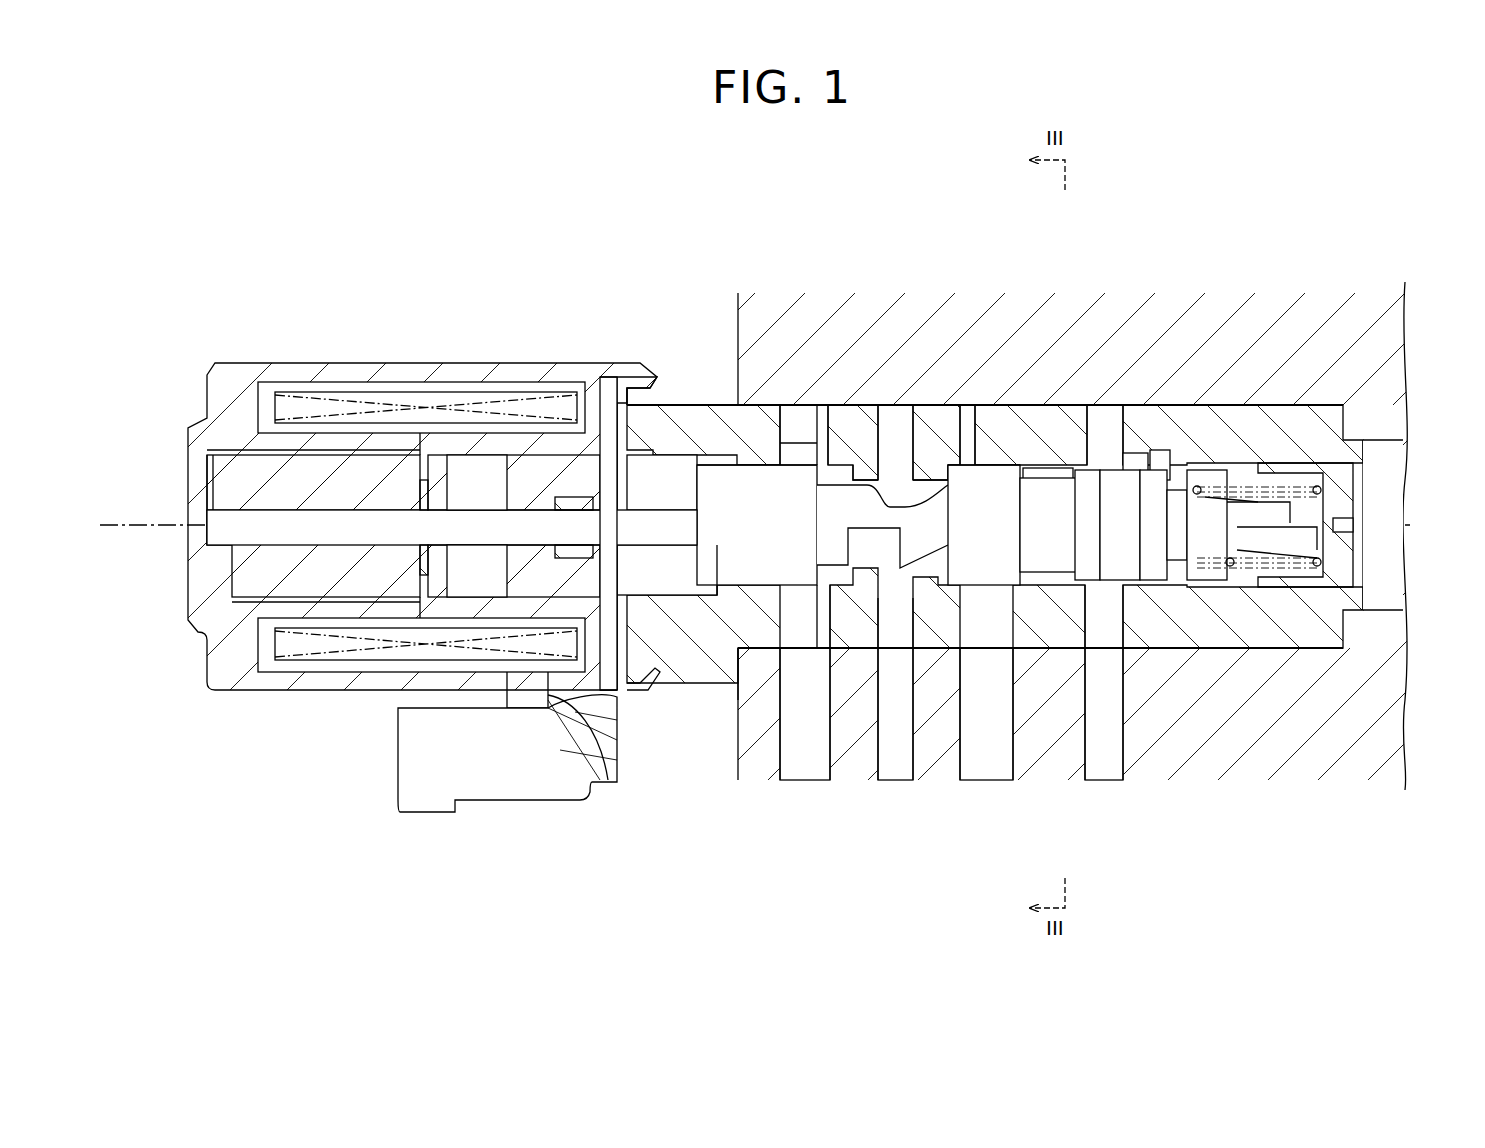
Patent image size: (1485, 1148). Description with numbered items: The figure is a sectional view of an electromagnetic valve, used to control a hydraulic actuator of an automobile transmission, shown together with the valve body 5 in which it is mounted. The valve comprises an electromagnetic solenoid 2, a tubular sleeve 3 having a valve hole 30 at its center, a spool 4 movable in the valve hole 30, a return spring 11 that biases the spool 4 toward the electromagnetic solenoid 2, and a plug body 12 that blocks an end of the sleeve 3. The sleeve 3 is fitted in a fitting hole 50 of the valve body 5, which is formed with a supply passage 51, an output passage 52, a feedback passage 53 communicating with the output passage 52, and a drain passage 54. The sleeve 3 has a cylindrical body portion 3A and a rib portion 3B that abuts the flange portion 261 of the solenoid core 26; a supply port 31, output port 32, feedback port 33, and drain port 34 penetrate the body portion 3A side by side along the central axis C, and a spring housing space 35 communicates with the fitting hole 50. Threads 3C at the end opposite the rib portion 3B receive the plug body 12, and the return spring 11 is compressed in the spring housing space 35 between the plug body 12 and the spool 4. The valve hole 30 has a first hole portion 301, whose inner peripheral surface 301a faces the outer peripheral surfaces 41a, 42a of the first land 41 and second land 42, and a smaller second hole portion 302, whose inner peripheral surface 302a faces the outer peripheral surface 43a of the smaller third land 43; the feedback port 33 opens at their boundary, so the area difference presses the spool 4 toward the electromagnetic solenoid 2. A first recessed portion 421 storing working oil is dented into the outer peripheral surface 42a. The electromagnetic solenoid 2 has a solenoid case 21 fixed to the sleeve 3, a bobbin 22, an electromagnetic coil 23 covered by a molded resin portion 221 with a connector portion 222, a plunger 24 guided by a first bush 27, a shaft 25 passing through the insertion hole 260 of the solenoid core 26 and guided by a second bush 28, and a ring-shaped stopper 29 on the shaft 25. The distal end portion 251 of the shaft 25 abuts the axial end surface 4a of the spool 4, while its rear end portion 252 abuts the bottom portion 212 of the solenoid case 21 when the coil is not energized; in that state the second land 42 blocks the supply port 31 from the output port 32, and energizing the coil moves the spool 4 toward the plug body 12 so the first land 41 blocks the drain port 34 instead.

The electromagnetic solenoid 2 is at (397, 574).
The sleeve 3 is at (710, 455).
The body portion 3A is at (733, 662).
The rib portion 3B is at (630, 690).
The threads 3C is at (1345, 580).
The spool 4 is at (969, 537).
The axial end surface 4a is at (712, 560).
The valve body 5 is at (1358, 770).
The return spring 11 is at (1338, 475).
The plug body 12 is at (1335, 488).
The solenoid case 21 is at (186, 635).
The bobbin 22 is at (335, 640).
The electromagnetic coil 23 is at (290, 645).
The plunger 24 is at (243, 468).
The shaft 25 is at (262, 515).
The solenoid core 26 is at (462, 470).
The first bush 27 is at (332, 450).
The second bush 28 is at (560, 495).
The stopper 29 is at (422, 490).
The valve hole 30 is at (680, 400).
The supply port 31 is at (1000, 630).
The output port 32 is at (900, 630).
The feedback port 33 is at (1125, 590).
The drain port 34 is at (822, 650).
The spring housing space 35 is at (1245, 580).
The first land 41 is at (757, 525).
The outer peripheral surface 41a is at (800, 440).
The second land 42 is at (984, 525).
The outer peripheral surface 42a is at (985, 445).
The third land 43 is at (1240, 600).
The outer peripheral surface 43a is at (1240, 485).
The fitting hole 50 is at (1375, 440).
The supply passage 51 is at (990, 770).
The output passage 52 is at (892, 770).
The feedback passage 53 is at (1105, 770).
The drain passage 54 is at (797, 770).
The bottom portion 212 is at (195, 553).
The molded resin portion 221 is at (388, 660).
The connector portion 222 is at (538, 780).
The distal end portion 251 is at (690, 512).
The rear end portion 252 is at (218, 520).
The insertion hole 260 is at (505, 515).
The flange portion 261 is at (596, 400).
The first hole portion 301 is at (892, 478).
The inner peripheral surface 301a is at (1043, 465).
The second hole portion 302 is at (1255, 490).
The inner peripheral surface 302a is at (1160, 462).
The first recessed portion 421 is at (1085, 472).
The central axis C is at (1375, 525).